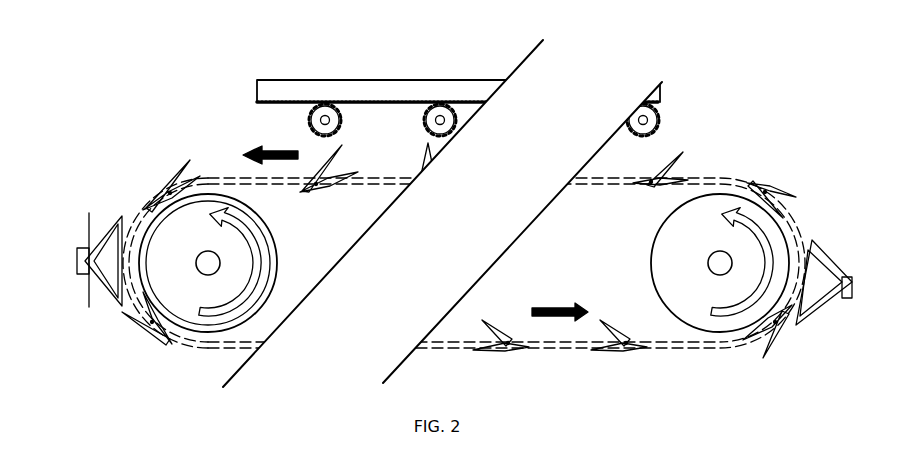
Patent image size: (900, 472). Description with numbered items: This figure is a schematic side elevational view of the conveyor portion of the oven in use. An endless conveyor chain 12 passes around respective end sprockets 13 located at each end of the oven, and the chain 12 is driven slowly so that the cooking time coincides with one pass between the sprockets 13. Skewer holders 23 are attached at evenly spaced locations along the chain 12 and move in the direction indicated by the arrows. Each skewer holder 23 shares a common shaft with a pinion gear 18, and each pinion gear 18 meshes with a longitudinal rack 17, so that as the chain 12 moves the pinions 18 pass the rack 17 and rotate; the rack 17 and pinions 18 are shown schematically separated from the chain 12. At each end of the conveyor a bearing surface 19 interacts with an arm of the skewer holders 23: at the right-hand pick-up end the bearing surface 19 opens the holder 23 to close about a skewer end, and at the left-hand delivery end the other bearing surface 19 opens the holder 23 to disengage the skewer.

The endless conveyor chain 12 is at (720, 176).
The end sprocket 13 is at (274, 266).
The longitudinal rack 17 is at (373, 87).
The pinion gear 18 is at (343, 124).
The bearing surface 19 is at (132, 218).
The skewer holder 23 is at (176, 150).